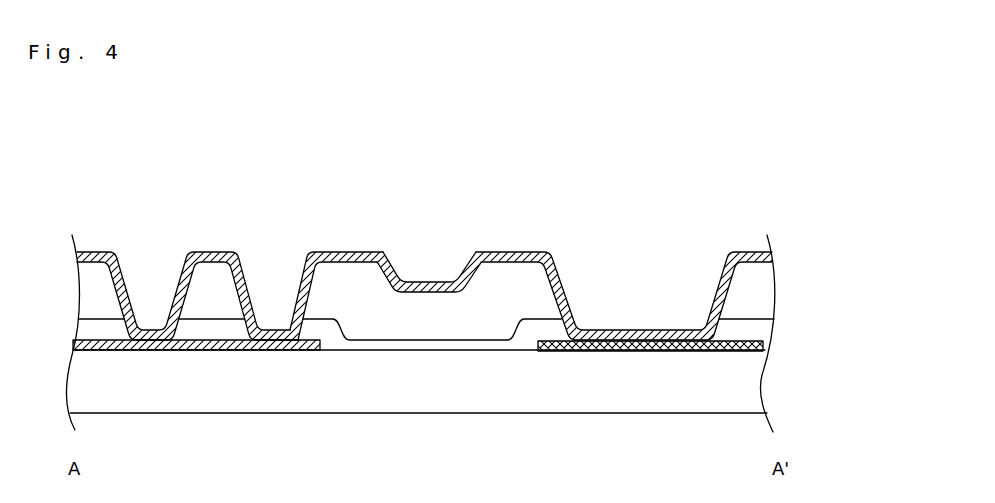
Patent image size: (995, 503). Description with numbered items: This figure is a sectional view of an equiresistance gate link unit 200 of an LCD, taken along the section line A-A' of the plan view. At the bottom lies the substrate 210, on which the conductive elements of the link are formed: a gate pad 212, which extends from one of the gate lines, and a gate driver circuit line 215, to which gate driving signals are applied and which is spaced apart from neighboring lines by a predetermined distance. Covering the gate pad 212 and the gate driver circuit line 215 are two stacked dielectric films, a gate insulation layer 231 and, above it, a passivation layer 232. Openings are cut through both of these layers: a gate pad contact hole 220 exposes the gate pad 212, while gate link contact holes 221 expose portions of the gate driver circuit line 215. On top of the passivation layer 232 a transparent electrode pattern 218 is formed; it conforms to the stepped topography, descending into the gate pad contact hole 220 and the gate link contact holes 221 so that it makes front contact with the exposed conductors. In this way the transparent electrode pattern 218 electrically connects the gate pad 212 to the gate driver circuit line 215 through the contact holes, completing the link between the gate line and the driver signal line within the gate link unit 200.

The equiresistance gate link unit 200 is at (520, 180).
The substrate 210 is at (438, 397).
The gate pad 212 is at (630, 351).
The gate driver circuit line 215 is at (208, 350).
The transparent electrode pattern 218 is at (383, 252).
The gate pad contact hole 220 is at (653, 248).
The gate link contact hole 221 is at (147, 248).
The gate insulation layer 231 is at (763, 331).
The passivation layer 232 is at (763, 293).